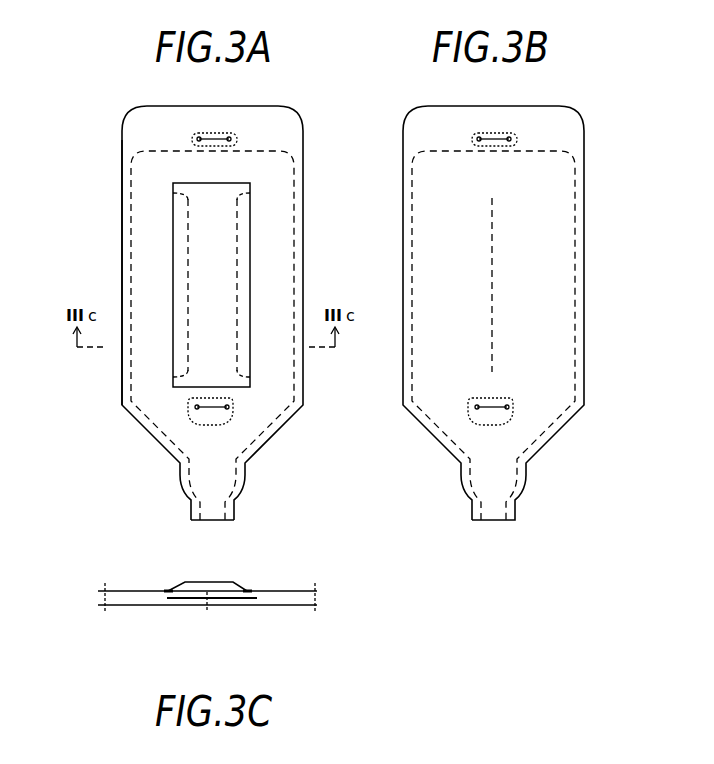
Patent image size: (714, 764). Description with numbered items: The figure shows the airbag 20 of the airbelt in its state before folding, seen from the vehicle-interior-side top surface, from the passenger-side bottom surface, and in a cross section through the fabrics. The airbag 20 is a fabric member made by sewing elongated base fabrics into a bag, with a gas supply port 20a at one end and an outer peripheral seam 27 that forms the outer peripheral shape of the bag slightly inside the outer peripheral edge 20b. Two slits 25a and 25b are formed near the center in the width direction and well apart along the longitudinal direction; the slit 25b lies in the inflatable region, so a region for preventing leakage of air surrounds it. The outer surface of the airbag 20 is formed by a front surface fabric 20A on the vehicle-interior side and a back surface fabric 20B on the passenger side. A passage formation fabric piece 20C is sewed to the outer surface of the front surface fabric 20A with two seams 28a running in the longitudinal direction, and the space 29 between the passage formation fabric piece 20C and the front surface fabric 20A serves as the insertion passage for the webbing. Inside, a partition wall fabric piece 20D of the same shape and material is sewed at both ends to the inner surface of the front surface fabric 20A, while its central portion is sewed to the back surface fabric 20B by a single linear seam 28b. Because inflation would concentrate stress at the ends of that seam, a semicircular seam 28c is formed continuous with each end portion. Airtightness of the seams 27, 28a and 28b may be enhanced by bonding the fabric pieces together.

In FIG. 3A, the airbag 20 is at (211, 313).
In FIG. 3B, the airbag 20 is at (537, 313).
In FIG. 3A, the front surface fabric 20A is at (141, 282).
In FIG. 3C, the front surface fabric 20A is at (290, 590).
In FIG. 3B, the back surface fabric 20B is at (545, 213).
In FIG. 3C, the back surface fabric 20B is at (290, 606).
In FIG. 3A, the passage formation fabric piece 20C is at (248, 345).
In FIG. 3C, the partition wall fabric piece 20D is at (225, 600).
In FIG. 3A, the gas supply port 20a is at (215, 521).
In FIG. 3A, the outer peripheral edge 20b is at (122, 253).
In FIG. 3A, the slit 25a is at (217, 133).
In FIG. 3B, the slit 25a is at (490, 133).
In FIG. 3A, the slit 25b is at (215, 409).
In FIG. 3B, the slit 25b is at (498, 410).
In FIG. 3A, the outer peripheral seam 27 is at (122, 153).
In FIG. 3B, the outer peripheral seam 27 is at (493, 335).
In FIG. 3C, the outer peripheral seam 27 is at (100, 588).
In FIG. 3A, the seams 28a is at (186, 224).
In FIG. 3C, the seams 28a is at (168, 590).
In FIG. 3B, the single linear seam 28b is at (494, 307).
In FIG. 3C, the single linear seam 28b is at (207, 606).
In FIG. 3A, the semicircular seam 28c is at (173, 193).
In FIG. 3C, the space (insertion passage) 29 is at (215, 583).